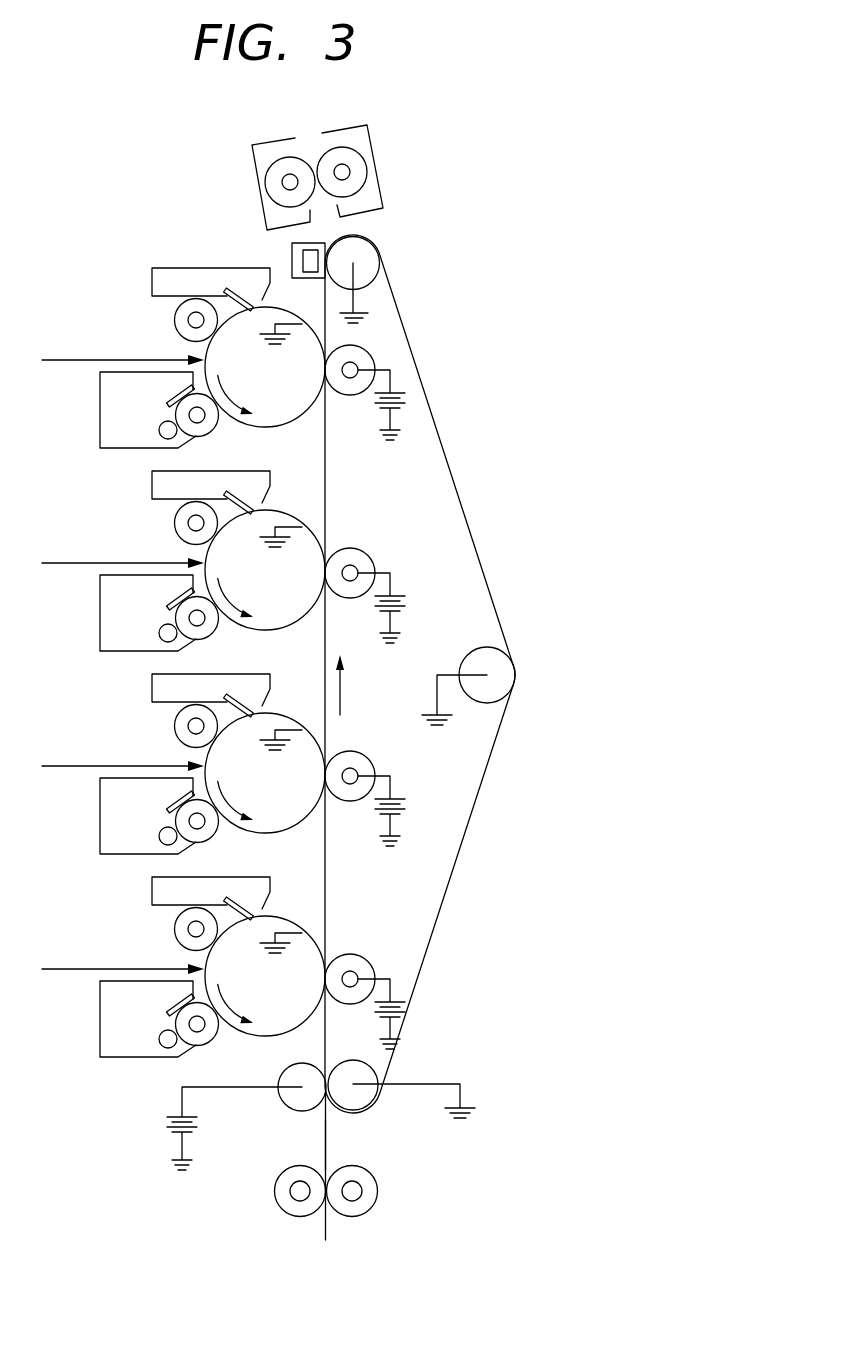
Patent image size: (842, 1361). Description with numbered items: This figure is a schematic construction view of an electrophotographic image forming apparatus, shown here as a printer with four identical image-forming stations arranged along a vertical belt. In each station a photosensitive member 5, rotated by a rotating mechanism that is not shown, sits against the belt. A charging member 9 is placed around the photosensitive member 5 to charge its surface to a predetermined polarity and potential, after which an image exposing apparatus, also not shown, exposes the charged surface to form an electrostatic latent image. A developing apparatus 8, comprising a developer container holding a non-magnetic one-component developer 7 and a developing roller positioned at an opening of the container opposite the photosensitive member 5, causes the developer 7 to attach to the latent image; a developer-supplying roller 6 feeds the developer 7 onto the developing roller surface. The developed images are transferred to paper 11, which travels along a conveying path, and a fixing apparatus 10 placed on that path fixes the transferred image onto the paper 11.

The photosensitive member 5 is at (305, 415).
The developer-supplying roller 6 is at (157, 434).
The non-magnetic developer 7 is at (108, 440).
The developing apparatus 8 is at (100, 392).
The charging member 9 is at (175, 316).
The fixing apparatus 10 is at (380, 178).
The paper 11 is at (326, 1149).